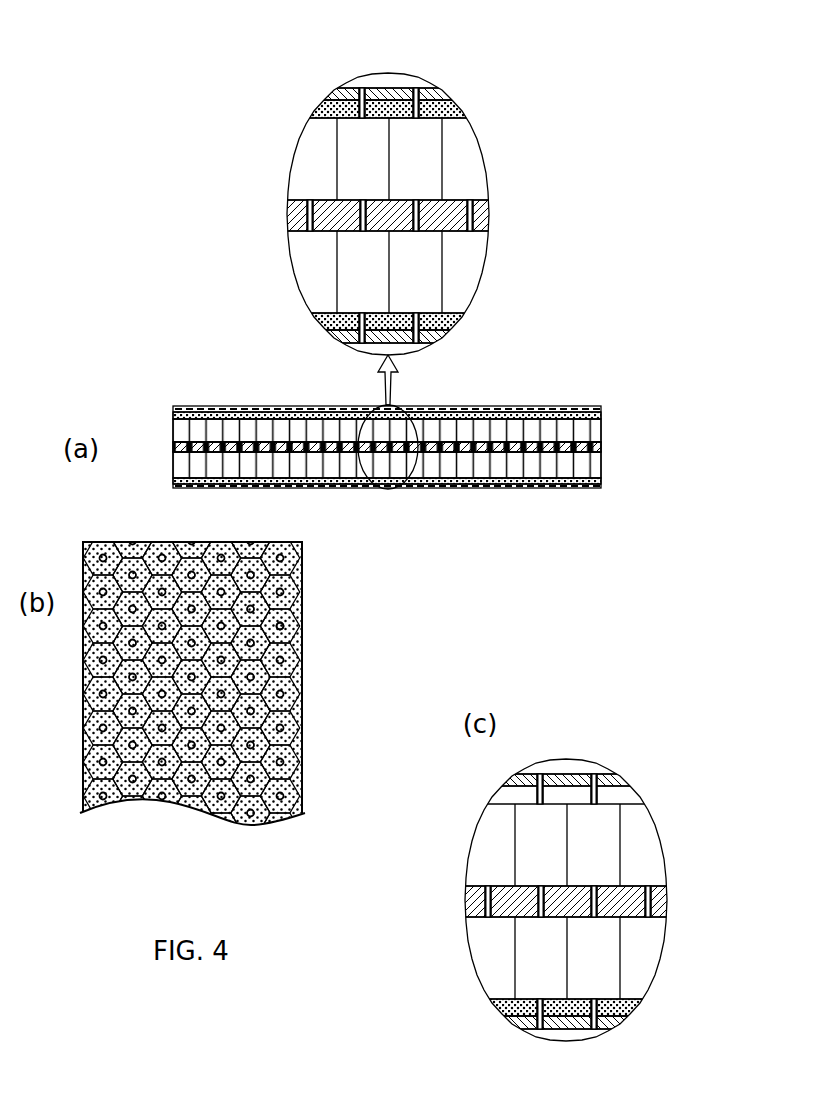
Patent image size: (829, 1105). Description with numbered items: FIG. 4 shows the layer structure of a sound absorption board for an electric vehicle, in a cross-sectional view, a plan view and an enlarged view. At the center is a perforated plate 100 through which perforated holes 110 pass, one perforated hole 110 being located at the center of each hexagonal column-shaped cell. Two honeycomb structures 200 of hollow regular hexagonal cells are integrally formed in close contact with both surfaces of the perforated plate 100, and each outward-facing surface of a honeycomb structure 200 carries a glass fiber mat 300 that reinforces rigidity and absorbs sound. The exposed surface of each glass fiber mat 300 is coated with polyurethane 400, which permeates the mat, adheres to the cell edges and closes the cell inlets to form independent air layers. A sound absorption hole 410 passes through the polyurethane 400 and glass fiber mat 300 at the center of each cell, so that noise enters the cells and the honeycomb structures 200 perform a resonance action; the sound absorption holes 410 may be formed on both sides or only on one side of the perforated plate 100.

The perforated plate 100 is at (486, 214).
The perforated hole 110 is at (300, 214).
The honeycomb structure 200 is at (318, 162).
The glass fiber mat 300 is at (332, 110).
The polyurethane 400 is at (303, 678).
The sound absorption hole 410 is at (415, 92).